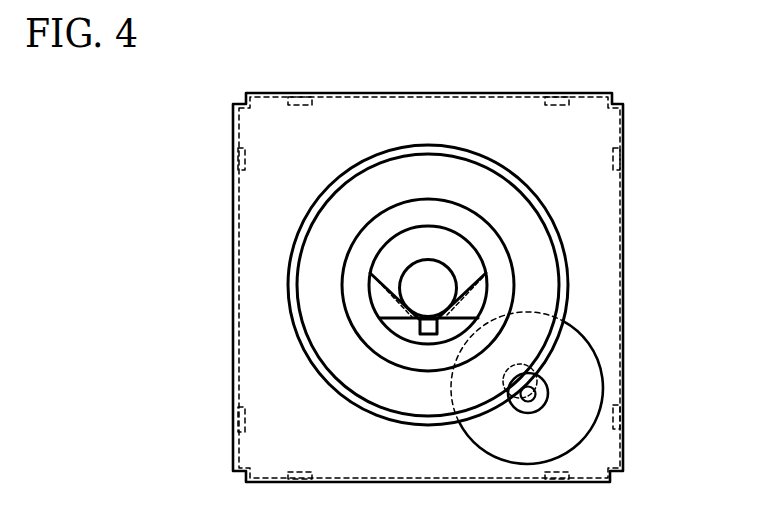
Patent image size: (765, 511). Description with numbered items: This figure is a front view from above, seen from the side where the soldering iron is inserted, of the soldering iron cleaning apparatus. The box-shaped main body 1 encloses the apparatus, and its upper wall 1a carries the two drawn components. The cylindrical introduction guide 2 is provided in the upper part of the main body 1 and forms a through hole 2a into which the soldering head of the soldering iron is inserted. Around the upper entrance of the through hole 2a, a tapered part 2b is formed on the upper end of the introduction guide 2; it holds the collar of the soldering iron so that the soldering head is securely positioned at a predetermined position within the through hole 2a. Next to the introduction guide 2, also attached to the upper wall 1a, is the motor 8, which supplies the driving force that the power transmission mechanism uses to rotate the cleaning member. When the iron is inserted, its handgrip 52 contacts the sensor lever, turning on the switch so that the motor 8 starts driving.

The main body 1 is at (235, 195).
The upper wall 1a is at (262, 248).
The introduction guide 2 is at (546, 201).
The tapered part 2b is at (470, 222).
The through hole 2a is at (462, 258).
The handgrip 52 is at (457, 273).
The motor 8 is at (583, 383).